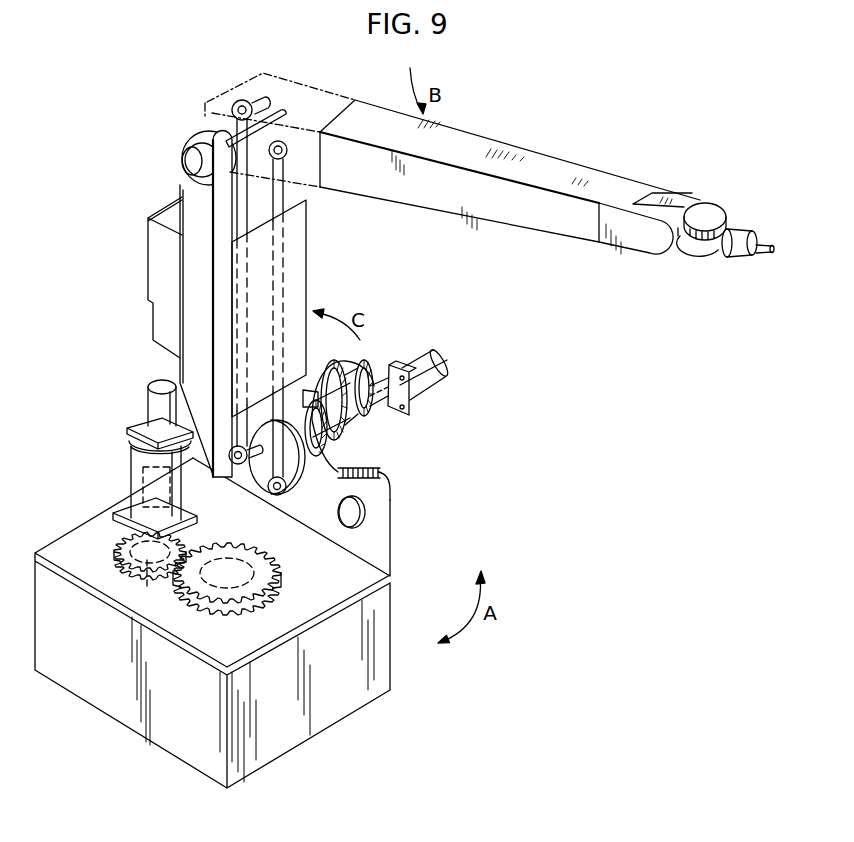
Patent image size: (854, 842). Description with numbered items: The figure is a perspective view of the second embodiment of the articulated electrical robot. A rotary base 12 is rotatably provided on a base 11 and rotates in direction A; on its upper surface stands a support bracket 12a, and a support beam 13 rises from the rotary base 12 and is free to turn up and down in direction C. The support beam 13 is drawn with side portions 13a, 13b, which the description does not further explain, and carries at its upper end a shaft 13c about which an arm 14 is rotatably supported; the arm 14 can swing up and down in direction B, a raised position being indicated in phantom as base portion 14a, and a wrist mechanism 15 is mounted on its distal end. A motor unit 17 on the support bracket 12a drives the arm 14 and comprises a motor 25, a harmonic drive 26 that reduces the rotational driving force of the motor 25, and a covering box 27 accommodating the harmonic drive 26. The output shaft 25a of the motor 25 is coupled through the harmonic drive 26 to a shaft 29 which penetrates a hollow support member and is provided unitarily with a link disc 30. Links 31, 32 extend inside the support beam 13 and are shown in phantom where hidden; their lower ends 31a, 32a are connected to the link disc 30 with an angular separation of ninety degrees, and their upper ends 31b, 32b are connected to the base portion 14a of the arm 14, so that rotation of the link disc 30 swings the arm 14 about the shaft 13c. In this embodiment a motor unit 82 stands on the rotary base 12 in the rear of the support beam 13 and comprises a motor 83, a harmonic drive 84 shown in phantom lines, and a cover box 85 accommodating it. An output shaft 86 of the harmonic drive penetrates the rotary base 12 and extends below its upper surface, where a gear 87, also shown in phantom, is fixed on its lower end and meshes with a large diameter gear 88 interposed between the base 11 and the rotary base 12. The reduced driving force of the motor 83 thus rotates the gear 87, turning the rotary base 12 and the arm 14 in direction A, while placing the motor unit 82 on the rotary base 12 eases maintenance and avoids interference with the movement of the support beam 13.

The base 11 is at (385, 660).
The rotary base 12 is at (357, 582).
The support bracket 12a is at (391, 536).
The support beam 13 is at (310, 222).
The side plate of column 13a is at (182, 184).
The bracket on column 13b is at (155, 270).
The shaft 13c is at (232, 118).
The arm 14 is at (446, 206).
The base portion of the arm 14a is at (246, 78).
The wrist mechanism 15 is at (684, 259).
The motor unit 17 is at (396, 360).
The motor 25 is at (441, 386).
The output shaft 25a is at (410, 402).
The harmonic drive 26 is at (362, 408).
The covering box 27 is at (352, 410).
The shaft 29 is at (353, 447).
The link disc 30 is at (300, 485).
The link 31 is at (278, 283).
The lower end of link 31a is at (279, 503).
The upper end of link 31b is at (282, 140).
The link 32 is at (241, 272).
The lower end of link 32a is at (235, 478).
The upper end of link 32b is at (246, 98).
The motor unit 82 is at (129, 459).
The motor 83 is at (150, 395).
The harmonic drive 84 is at (143, 468).
The cover box 85 is at (131, 487).
The output shaft 86 is at (147, 585).
The gear 87 is at (122, 552).
The large diameter gear 88 is at (230, 608).